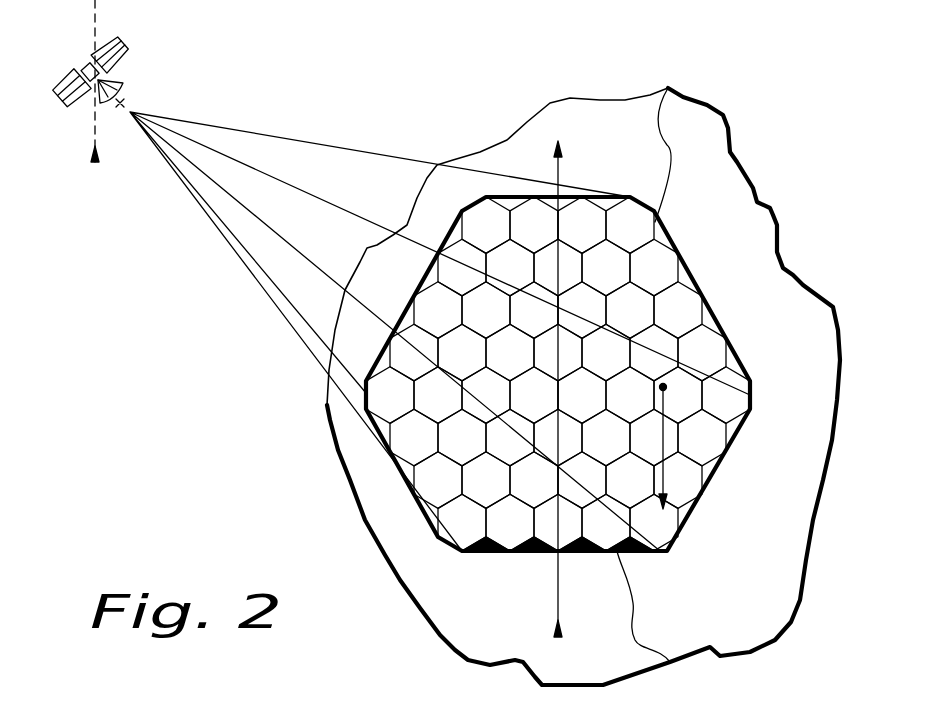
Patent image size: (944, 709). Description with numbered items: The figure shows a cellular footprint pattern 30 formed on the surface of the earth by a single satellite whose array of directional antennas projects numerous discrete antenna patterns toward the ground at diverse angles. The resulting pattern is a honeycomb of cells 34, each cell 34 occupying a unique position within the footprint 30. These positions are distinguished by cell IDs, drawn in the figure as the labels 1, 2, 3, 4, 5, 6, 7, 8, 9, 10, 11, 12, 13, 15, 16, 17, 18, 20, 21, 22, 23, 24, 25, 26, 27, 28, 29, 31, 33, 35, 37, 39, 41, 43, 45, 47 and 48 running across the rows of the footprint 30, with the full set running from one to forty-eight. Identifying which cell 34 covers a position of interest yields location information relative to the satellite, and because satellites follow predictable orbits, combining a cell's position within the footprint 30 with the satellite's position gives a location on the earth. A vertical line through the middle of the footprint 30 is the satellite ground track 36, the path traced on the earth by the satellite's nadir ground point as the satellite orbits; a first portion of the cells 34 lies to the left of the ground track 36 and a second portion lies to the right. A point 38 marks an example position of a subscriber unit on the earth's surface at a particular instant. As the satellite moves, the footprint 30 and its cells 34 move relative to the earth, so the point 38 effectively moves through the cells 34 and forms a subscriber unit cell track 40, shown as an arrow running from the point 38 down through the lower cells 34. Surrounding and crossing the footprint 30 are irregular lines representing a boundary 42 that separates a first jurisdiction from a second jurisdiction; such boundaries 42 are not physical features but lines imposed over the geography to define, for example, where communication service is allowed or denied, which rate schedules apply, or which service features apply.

The cellular footprint pattern 30 is at (715, 406).
The cells 34 is at (448, 253).
The satellite ground track 36 is at (643, 448).
The point 38 is at (427, 491).
The subscriber unit cell track 40 is at (523, 491).
The boundary 42 is at (619, 491).
The cell ID 1 is at (475, 236).
The cell ID 2 is at (523, 236).
The cell ID 3 is at (571, 236).
The cell ID 4 is at (619, 236).
The cell ID 5 is at (451, 278).
The cell ID 6 is at (499, 278).
The cell ID 7 is at (547, 278).
The cell ID 8 is at (595, 278).
The cell ID 9 is at (643, 278).
The cell ID 10 is at (427, 321).
The cell ID 11 is at (475, 321).
The cell ID 12 is at (523, 321).
The cell ID 13 is at (571, 321).
The cell ID 15 is at (667, 321).
The cell ID 16 is at (403, 364).
The cell ID 17 is at (451, 364).
The cell ID 18 is at (499, 364).
The cell ID 20 is at (595, 364).
The cell ID 21 is at (643, 364).
The cell ID 22 is at (691, 364).
The cell ID 23 is at (379, 406).
The cell ID 24 is at (427, 406).
The cell ID 25 is at (475, 406).
The cell ID 26 is at (523, 406).
The cell ID 27 is at (571, 406).
The cell ID 28 is at (619, 406).
The cell ID 29 is at (667, 406).
The cell ID 31 is at (403, 448).
The cell ID 33 is at (499, 448).
The cell ID 35 is at (595, 448).
The cell ID 37 is at (691, 448).
The cell ID 39 is at (475, 491).
The cell ID 41 is at (571, 491).
The cell ID 43 is at (667, 491).
The cell ID 45 is at (499, 534).
The cell ID 47 is at (595, 534).
The cell ID 48 is at (643, 534).